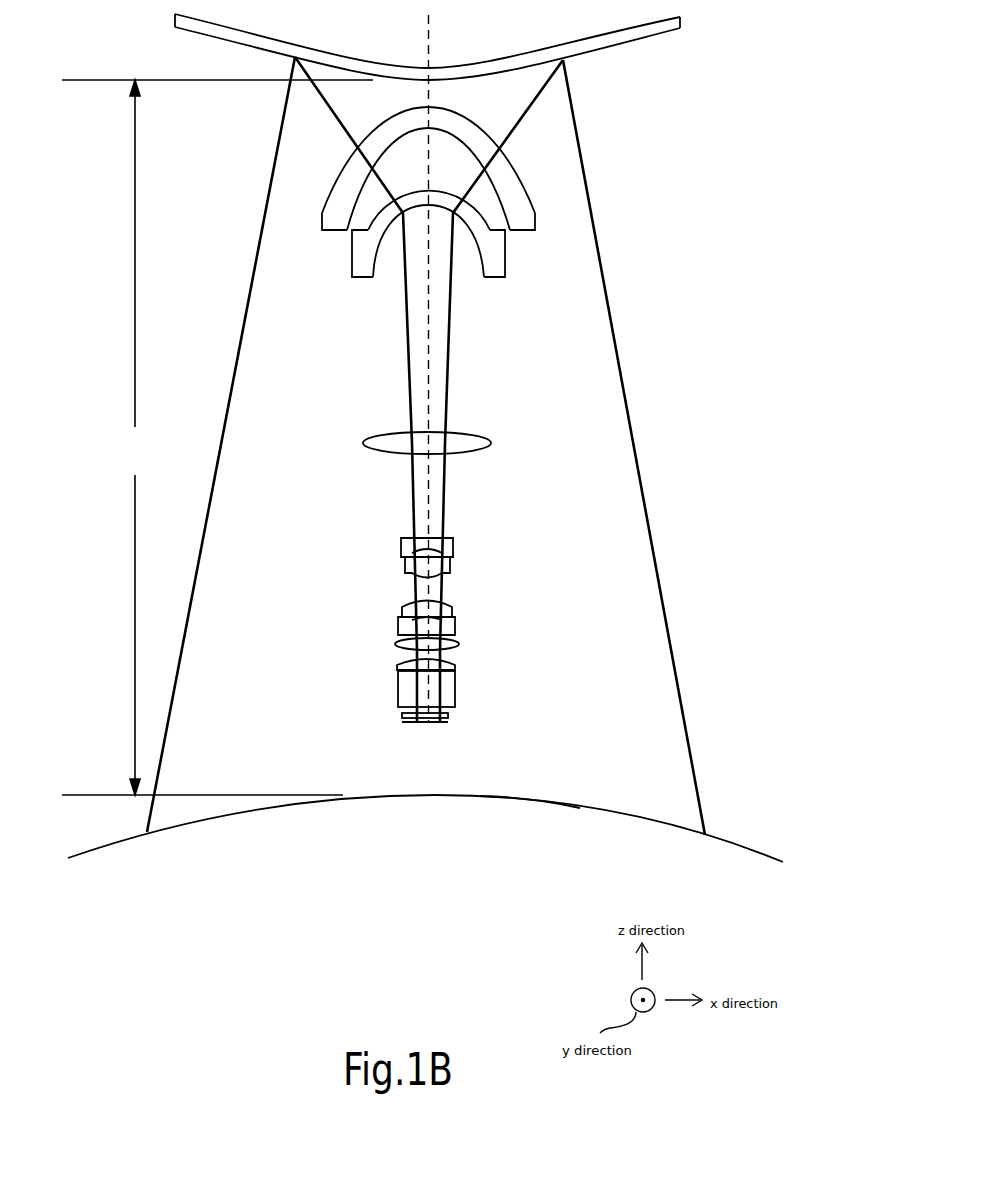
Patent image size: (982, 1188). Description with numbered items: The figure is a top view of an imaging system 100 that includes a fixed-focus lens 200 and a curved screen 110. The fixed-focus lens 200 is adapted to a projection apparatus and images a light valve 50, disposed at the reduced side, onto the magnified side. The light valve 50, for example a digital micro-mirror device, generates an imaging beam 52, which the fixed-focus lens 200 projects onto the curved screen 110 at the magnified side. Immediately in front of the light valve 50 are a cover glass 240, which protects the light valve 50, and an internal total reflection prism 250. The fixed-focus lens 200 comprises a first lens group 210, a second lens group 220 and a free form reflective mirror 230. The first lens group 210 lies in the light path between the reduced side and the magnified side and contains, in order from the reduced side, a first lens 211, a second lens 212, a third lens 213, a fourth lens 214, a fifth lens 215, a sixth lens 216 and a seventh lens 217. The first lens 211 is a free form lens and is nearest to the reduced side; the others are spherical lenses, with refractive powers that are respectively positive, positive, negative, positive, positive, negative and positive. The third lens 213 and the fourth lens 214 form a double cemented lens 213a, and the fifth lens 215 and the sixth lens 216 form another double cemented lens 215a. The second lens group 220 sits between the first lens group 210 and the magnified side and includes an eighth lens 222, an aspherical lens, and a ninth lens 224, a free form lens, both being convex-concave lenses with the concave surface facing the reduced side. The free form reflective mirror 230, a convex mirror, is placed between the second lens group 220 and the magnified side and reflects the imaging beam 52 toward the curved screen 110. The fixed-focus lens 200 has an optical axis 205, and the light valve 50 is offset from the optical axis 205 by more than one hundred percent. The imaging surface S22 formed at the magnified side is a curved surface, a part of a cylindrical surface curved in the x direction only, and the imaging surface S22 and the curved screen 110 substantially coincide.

The imaging system 100 is at (422, 458).
The curved screen 110 is at (743, 848).
The fixed-focus lens 200 is at (343, 508).
The optical axis 205 is at (437, 369).
The first lens group 210 is at (505, 548).
The first lens 211 is at (493, 671).
The second lens 212 is at (458, 645).
The third lens 213 is at (453, 622).
The double cemented lens 213a is at (494, 603).
The fourth lens 214 is at (453, 605).
The fifth lens 215 is at (453, 565).
The double cemented lens 215a is at (495, 542).
The sixth lens 216 is at (450, 551).
The seventh lens 217 is at (473, 437).
The second lens group 220 is at (524, 192).
The eighth lens 222 is at (498, 265).
The ninth lens 224 is at (527, 208).
The free form reflective mirror 230 is at (681, 26).
The cover glass 240 is at (450, 716).
The internal total reflection prism 250 is at (450, 690).
The light valve 50 is at (443, 722).
The imaging beam 52 is at (635, 443).
The imaging surface S22 is at (538, 792).